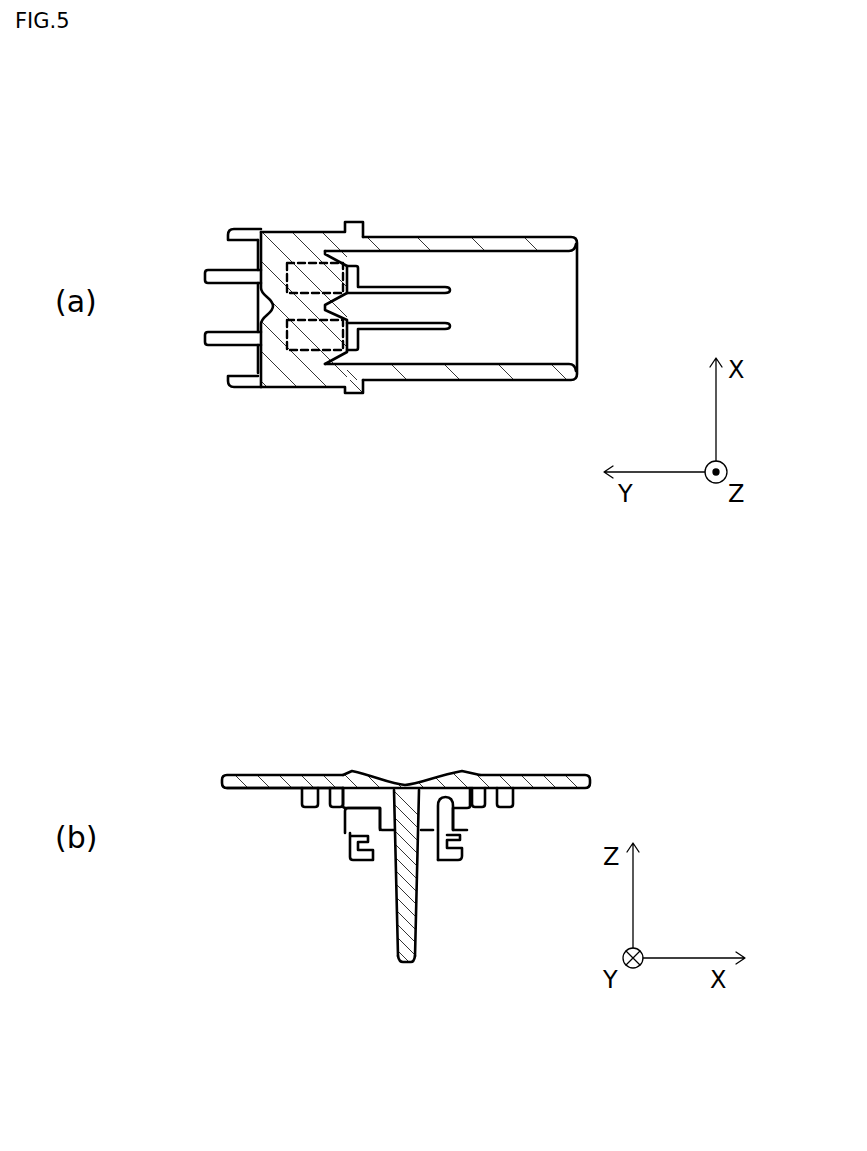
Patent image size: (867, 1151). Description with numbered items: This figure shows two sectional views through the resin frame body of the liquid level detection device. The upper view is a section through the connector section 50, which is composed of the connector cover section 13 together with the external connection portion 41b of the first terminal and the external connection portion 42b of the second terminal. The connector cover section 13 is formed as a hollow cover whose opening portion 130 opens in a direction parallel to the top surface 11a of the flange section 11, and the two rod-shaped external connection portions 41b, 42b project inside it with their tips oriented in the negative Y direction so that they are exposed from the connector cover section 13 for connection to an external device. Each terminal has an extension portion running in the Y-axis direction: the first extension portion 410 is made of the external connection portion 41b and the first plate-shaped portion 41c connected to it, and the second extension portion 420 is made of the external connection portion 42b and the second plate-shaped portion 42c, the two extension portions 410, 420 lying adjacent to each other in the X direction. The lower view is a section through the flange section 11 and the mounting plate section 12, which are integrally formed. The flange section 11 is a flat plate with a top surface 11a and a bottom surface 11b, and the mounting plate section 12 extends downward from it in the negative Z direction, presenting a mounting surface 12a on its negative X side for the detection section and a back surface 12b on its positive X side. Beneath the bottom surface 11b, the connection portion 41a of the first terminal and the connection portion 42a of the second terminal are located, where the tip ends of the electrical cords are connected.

The connector section 50 is at (556, 188).
The connector cover section 13 is at (478, 237).
The opening portion 130 is at (527, 252).
The second extension portion 420 is at (452, 165).
The second plate-shaped portion 42c is at (312, 268).
The external connection portion 42b is at (417, 287).
The first extension portion 410 is at (456, 448).
The first plate-shaped portion 41c is at (310, 345).
The external connection portion 41b is at (423, 329).
The flange section 11 is at (232, 778).
The top surface 11a is at (262, 775).
The bottom surface 11b is at (262, 790).
The connection portion 41a is at (357, 860).
The connection portion 42a is at (467, 860).
The mounting plate section 12 is at (405, 962).
The mounting surface 12a is at (397, 932).
The back surface 12b is at (416, 931).